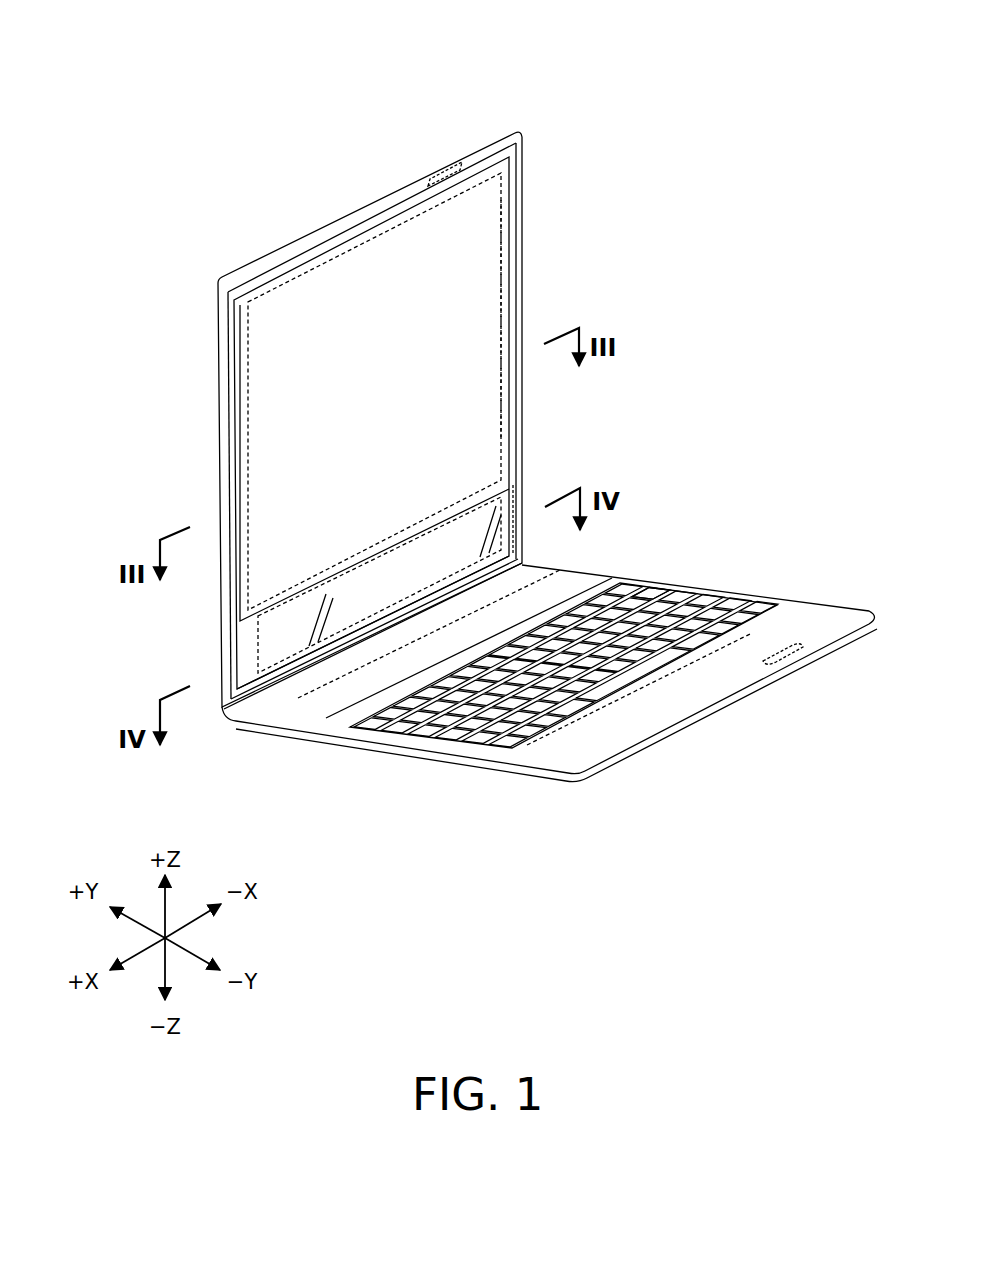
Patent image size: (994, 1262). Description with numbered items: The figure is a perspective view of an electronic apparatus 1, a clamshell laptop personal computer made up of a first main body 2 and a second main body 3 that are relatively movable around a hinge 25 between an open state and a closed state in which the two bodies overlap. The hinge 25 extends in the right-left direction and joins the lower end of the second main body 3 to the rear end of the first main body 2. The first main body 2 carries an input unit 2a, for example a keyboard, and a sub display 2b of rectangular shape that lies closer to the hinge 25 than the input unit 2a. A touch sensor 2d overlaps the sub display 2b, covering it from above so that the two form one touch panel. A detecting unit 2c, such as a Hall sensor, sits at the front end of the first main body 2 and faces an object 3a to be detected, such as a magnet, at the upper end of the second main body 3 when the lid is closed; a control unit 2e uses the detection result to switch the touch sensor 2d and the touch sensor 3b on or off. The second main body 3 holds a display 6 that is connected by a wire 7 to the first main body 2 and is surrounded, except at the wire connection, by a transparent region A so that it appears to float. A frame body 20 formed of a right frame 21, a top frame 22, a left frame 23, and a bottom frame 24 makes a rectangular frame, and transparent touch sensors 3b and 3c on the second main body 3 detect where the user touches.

The electronic apparatus 1 is at (169, 176).
The first main body 2 is at (495, 778).
The input unit 2a is at (653, 596).
The sub display 2b is at (650, 594).
The detecting unit 2c is at (797, 657).
The touch sensor 2d is at (568, 577).
The control unit 2e is at (630, 700).
The second main body 3 is at (202, 440).
The object to be detected 3a is at (443, 166).
The touch sensor 3b is at (514, 554).
The touch sensor 3c is at (506, 318).
The display 6 is at (486, 272).
The wire 7 is at (243, 652).
The frame body 20 is at (513, 118).
The right frame 21 is at (524, 188).
The top frame 22 is at (365, 212).
The left frame 23 is at (217, 355).
The bottom frame 24 is at (417, 613).
The hinge 25 is at (505, 572).
The transparent region A is at (280, 640).